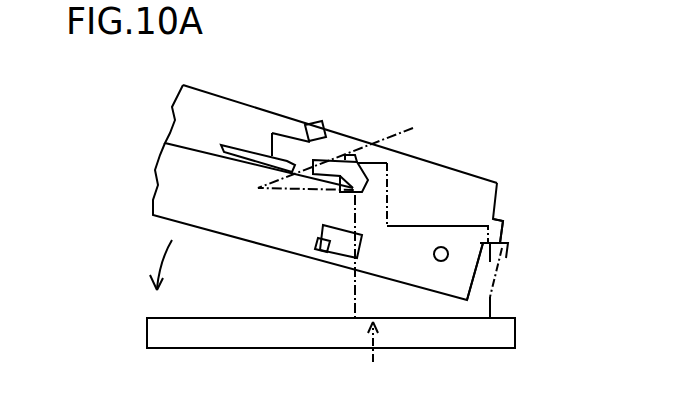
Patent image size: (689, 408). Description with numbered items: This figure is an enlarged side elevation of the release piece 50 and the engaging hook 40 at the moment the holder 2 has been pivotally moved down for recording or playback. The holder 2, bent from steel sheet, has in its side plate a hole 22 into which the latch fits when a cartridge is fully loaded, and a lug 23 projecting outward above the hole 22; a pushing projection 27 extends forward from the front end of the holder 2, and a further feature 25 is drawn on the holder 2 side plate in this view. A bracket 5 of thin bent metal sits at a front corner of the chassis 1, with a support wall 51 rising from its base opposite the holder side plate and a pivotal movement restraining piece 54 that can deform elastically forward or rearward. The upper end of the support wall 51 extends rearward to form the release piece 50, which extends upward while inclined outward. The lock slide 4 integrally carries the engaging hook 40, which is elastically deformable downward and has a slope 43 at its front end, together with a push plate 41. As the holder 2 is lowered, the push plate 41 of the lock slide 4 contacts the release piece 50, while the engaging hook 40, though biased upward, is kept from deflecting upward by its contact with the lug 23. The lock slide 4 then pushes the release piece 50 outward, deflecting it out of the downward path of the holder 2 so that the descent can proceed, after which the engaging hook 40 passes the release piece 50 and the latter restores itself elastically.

The chassis 1 is at (238, 334).
The holder 2 is at (447, 168).
The lock slide 4 is at (205, 103).
The bracket 5 is at (380, 394).
The hole 22 is at (322, 250).
The lug 23 is at (343, 160).
The hole 25 is at (447, 246).
The pushing projection 27 is at (505, 221).
The engaging hook 40 is at (303, 150).
The push plate 41 is at (245, 153).
The slope 43 is at (345, 158).
The release piece 50 is at (413, 128).
The support wall 51 is at (403, 308).
The pivotal movement restraining piece 54 is at (507, 257).